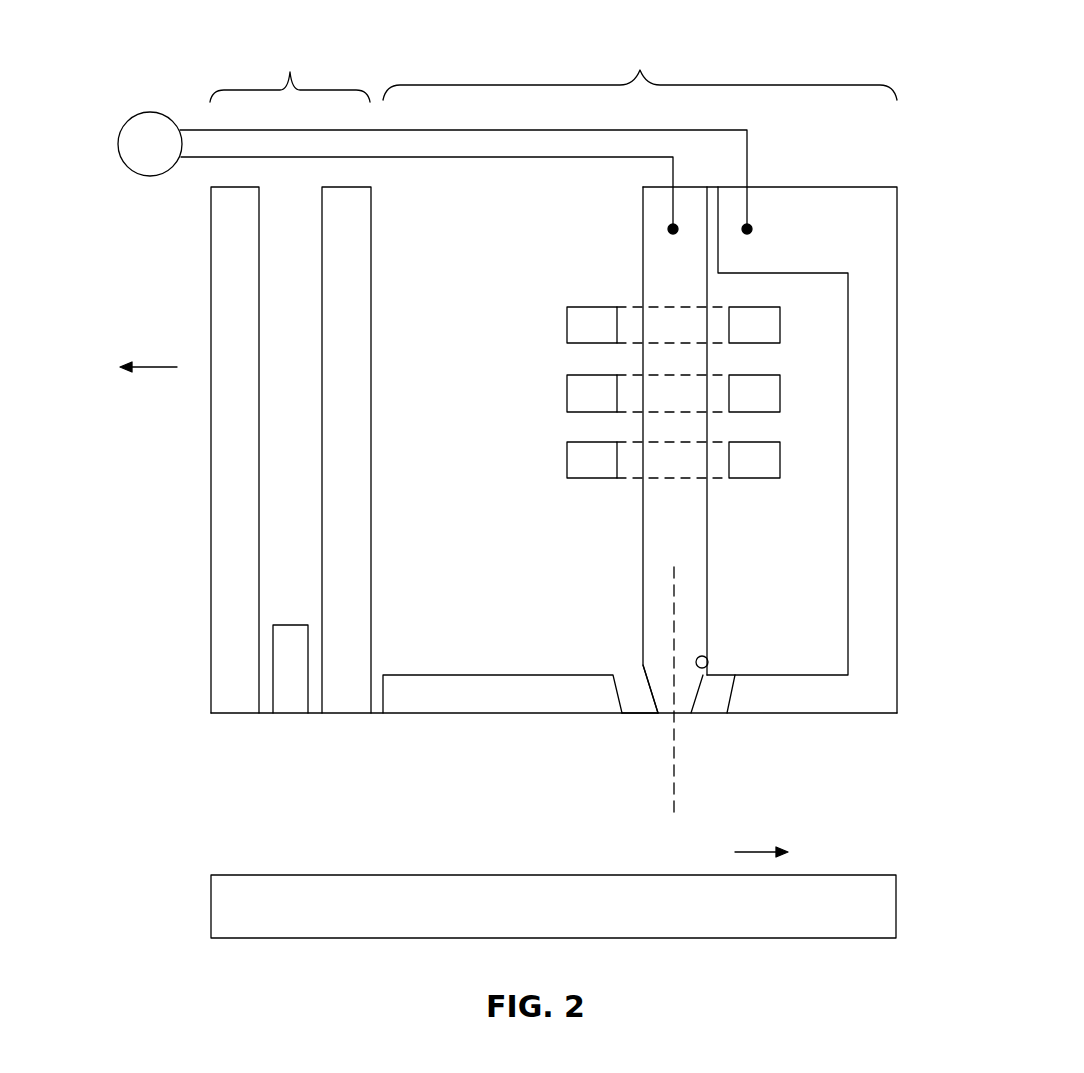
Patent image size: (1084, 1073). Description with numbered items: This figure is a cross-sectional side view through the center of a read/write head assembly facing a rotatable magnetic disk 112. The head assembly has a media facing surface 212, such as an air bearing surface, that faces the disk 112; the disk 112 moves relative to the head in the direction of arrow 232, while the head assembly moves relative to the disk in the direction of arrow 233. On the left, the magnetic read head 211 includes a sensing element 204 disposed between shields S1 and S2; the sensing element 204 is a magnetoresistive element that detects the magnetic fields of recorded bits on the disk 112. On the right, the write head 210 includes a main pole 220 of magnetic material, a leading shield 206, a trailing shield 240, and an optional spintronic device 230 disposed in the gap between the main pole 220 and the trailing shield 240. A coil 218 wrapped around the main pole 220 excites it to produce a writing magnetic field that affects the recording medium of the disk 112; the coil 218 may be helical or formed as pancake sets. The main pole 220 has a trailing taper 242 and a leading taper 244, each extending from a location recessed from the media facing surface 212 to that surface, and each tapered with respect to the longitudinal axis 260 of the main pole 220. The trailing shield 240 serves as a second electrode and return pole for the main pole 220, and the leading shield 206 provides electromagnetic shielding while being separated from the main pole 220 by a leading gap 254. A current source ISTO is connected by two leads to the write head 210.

The rotatable magnetic disk 112 is at (210, 905).
The sensing element 204 is at (290, 713).
The leading shield 206 is at (458, 713).
The write head 210 is at (640, 70).
The magnetic read head 211 is at (290, 71).
The media facing surface (MFS) 212 is at (778, 715).
The coil 218 is at (592, 478).
The main pole 220 is at (693, 533).
The spintronic device 230 is at (718, 705).
The arrow indicating disk movement direction 232 is at (752, 850).
The arrow indicating head assembly movement direction 233 is at (147, 365).
The trailing shield (TS) 240 is at (867, 705).
The trailing taper 242 is at (708, 661).
The leading taper 244 is at (648, 683).
The leading gap 254 is at (640, 713).
The longitudinal axis 260 is at (670, 785).
The shield S1 is at (233, 713).
The shield S2 is at (348, 713).
The spin torque oscillator current source ISTO is at (435, 173).